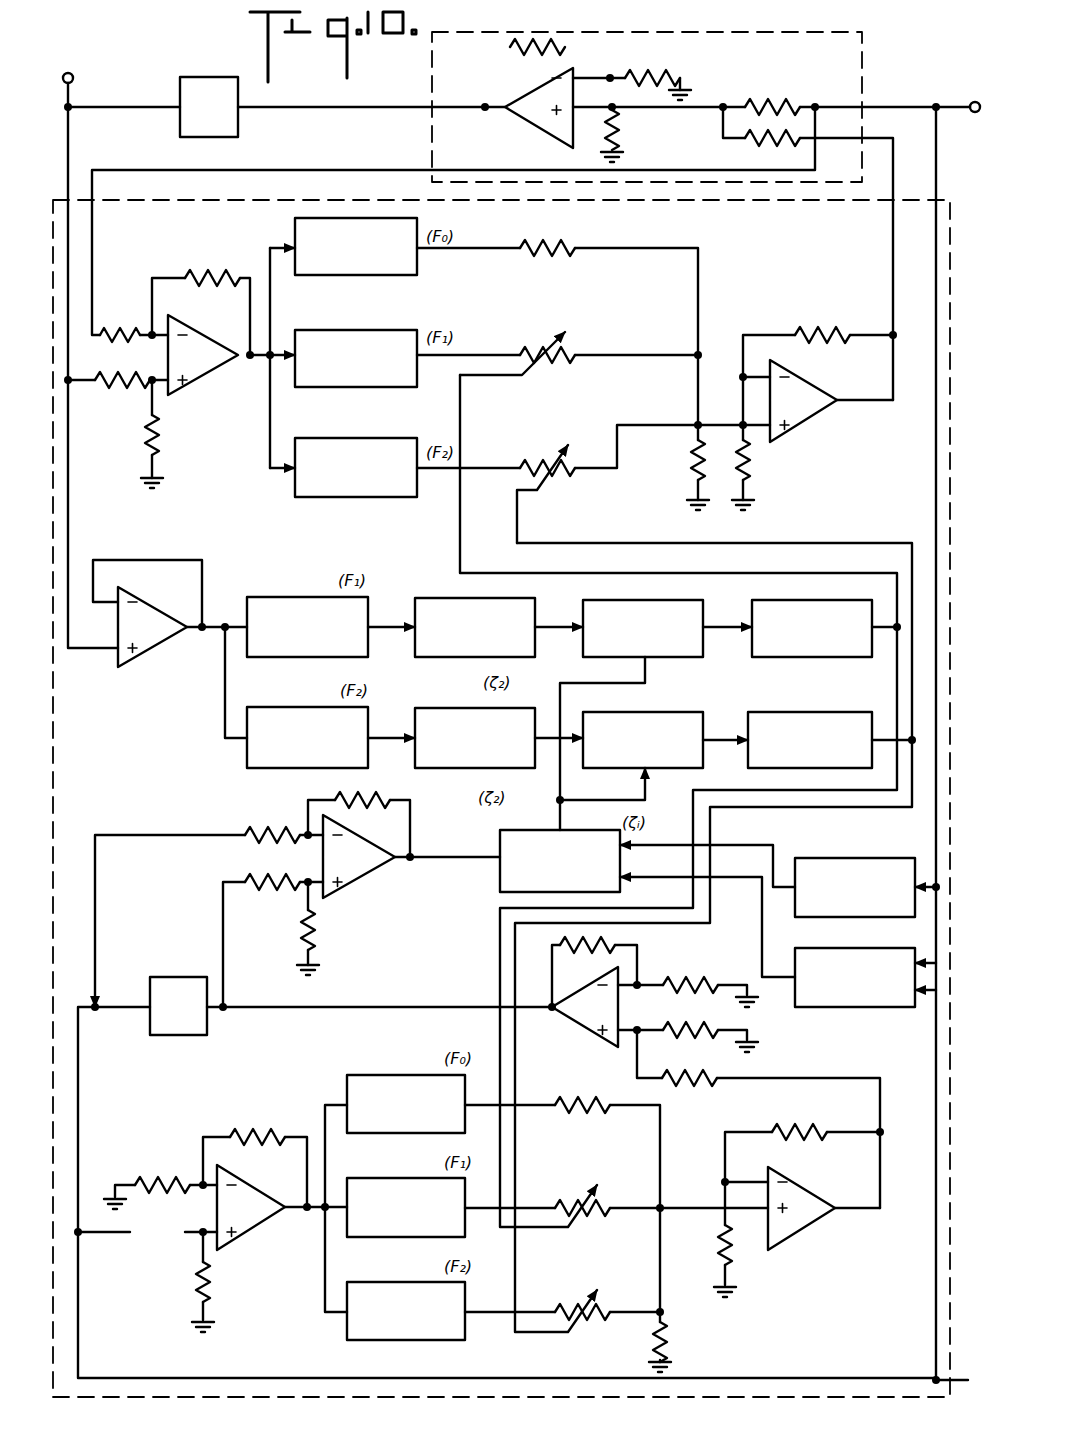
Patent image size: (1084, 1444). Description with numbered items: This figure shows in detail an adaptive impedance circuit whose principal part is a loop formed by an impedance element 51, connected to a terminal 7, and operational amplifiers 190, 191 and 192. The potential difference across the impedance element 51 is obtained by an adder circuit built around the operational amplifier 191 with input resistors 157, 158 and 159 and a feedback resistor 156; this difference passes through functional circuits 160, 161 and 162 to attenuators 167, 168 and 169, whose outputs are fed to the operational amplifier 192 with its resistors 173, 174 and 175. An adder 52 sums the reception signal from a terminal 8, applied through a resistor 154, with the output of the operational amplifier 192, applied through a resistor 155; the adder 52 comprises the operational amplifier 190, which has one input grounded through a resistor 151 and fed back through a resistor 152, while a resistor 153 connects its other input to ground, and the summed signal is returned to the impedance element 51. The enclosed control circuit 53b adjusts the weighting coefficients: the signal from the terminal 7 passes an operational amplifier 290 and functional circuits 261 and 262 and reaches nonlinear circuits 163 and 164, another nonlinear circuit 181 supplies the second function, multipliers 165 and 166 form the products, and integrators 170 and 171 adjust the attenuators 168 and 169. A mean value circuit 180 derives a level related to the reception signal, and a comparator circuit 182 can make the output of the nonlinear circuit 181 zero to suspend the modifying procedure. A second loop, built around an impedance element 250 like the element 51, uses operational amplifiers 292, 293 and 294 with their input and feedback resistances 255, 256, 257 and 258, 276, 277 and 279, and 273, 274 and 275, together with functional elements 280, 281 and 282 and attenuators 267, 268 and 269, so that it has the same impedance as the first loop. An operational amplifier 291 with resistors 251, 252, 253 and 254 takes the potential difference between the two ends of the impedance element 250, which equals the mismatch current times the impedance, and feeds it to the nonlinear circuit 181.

The terminal 7 is at (76, 76).
The terminal 8 is at (971, 101).
The impedance element 51 is at (219, 76).
The adder 52 is at (864, 84).
The adaptive filter circuit 53b is at (950, 200).
The resistor 151 is at (642, 76).
The resistor 152 is at (536, 45).
The resistor 153 is at (622, 130).
The resistor 154 is at (783, 92).
The resistor 155 is at (760, 141).
The feedback resistor 156 is at (222, 276).
The input resistor 157 is at (162, 444).
The input resistor 158 is at (115, 390).
The input resistor 159 is at (130, 332).
The functional circuit 160 is at (360, 277).
The functional circuit 161 is at (354, 389).
The functional circuit 162 is at (362, 499).
The nonlinear circuit 163 is at (425, 707).
The nonlinear circuit 164 is at (433, 597).
The multiplier 165 is at (712, 705).
The multiplier 166 is at (583, 600).
The attenuator 167 is at (546, 258).
The attenuator 168 is at (563, 368).
The attenuator 169 is at (527, 462).
The integrator 170 is at (840, 712).
The integrator 171 is at (752, 600).
The resistor 173 is at (750, 483).
The resistor 174 is at (828, 333).
The resistor 175 is at (692, 476).
The mean value circuit 180 is at (854, 858).
The nonlinear circuit 181 is at (500, 886).
The comparator circuit 182 is at (877, 1007).
The operational amplifier 190 is at (533, 97).
The operational amplifier 191 is at (204, 380).
The operational amplifier 192 is at (815, 420).
The impedance element 250 is at (182, 977).
The feedback resistor 251 is at (372, 799).
The resistor 252 is at (246, 830).
The resistor 253 is at (258, 878).
The resistor 254 is at (321, 937).
The resistance 255 is at (594, 950).
The resistance 256 is at (690, 980).
The resistance 257 is at (699, 1017).
The resistance 258 is at (700, 1068).
The functional circuit 261 is at (282, 596).
The functional circuit 262 is at (292, 706).
The attenuator 267 is at (585, 1100).
The attenuator 268 is at (590, 1192).
The attenuator 269 is at (589, 1296).
The resistance 273 is at (742, 1265).
The resistance 274 is at (804, 1130).
The resistance 275 is at (678, 1337).
The resistance 276 is at (248, 1132).
The resistance 277 is at (160, 1181).
The resistance 279 is at (210, 1285).
The functional element 280 is at (372, 1075).
The functional element 281 is at (398, 1178).
The functional element 282 is at (395, 1282).
The operational amplifier 290 is at (148, 654).
The operational amplifier 291 is at (352, 880).
The operational amplifier 292 is at (565, 1028).
The operational amplifier 293 is at (250, 1183).
The operational amplifier 294 is at (812, 1229).